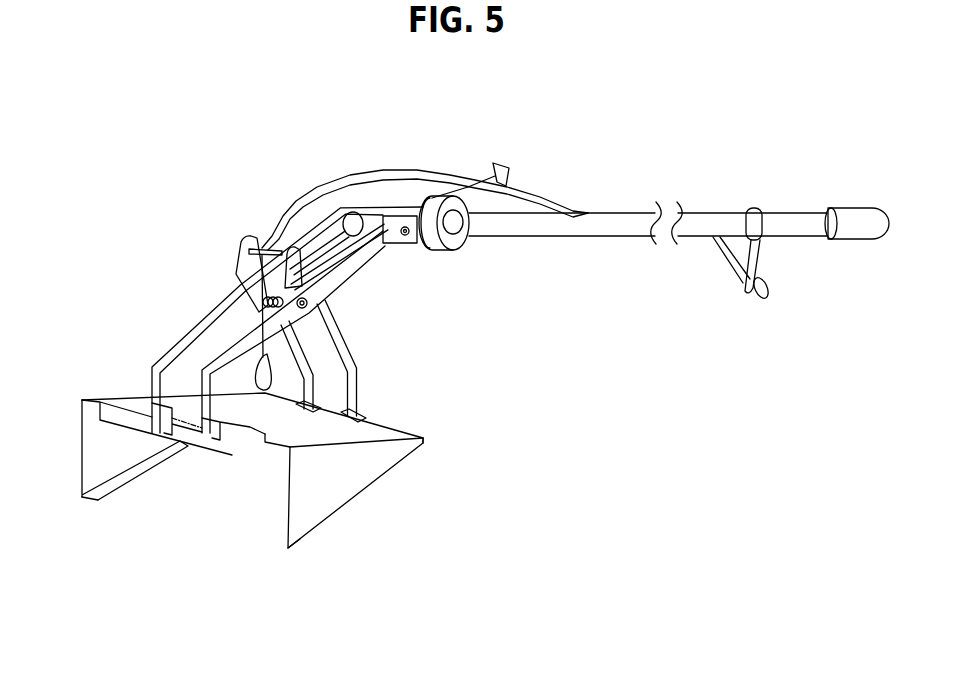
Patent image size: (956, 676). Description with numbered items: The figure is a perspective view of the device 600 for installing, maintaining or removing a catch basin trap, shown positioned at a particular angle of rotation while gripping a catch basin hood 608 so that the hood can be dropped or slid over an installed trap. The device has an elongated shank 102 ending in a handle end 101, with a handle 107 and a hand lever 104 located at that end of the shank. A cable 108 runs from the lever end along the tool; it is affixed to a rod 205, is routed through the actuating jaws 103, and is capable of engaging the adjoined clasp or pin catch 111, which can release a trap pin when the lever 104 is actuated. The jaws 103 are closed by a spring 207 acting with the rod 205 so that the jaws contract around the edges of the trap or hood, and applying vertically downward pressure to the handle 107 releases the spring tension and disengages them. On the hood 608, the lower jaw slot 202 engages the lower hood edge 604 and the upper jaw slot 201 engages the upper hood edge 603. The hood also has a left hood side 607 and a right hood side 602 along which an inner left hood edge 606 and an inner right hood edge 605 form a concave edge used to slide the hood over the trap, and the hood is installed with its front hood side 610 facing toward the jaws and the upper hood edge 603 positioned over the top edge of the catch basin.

The device 600 is at (165, 108).
The handle end 101 is at (786, 216).
The shank 102 is at (614, 218).
The actuating jaws 103 is at (340, 343).
The lever 104 is at (766, 302).
The handle 107 is at (856, 232).
The cable 108 is at (385, 172).
The pin catch 111 is at (258, 375).
The upper jaw slot 201 is at (372, 418).
The lower jaw slot 202 is at (115, 413).
The rod 205 is at (258, 247).
The spring 207 is at (255, 282).
The right hood side 602 is at (340, 493).
The upper hood edge 603 is at (425, 445).
The lower hood edge 604 is at (280, 453).
The inner right hood edge 605 is at (281, 552).
The inner left hood edge 606 is at (96, 503).
The left hood side 607 is at (85, 453).
The catch basin hood 608 is at (330, 428).
The front hood side 610 is at (296, 427).